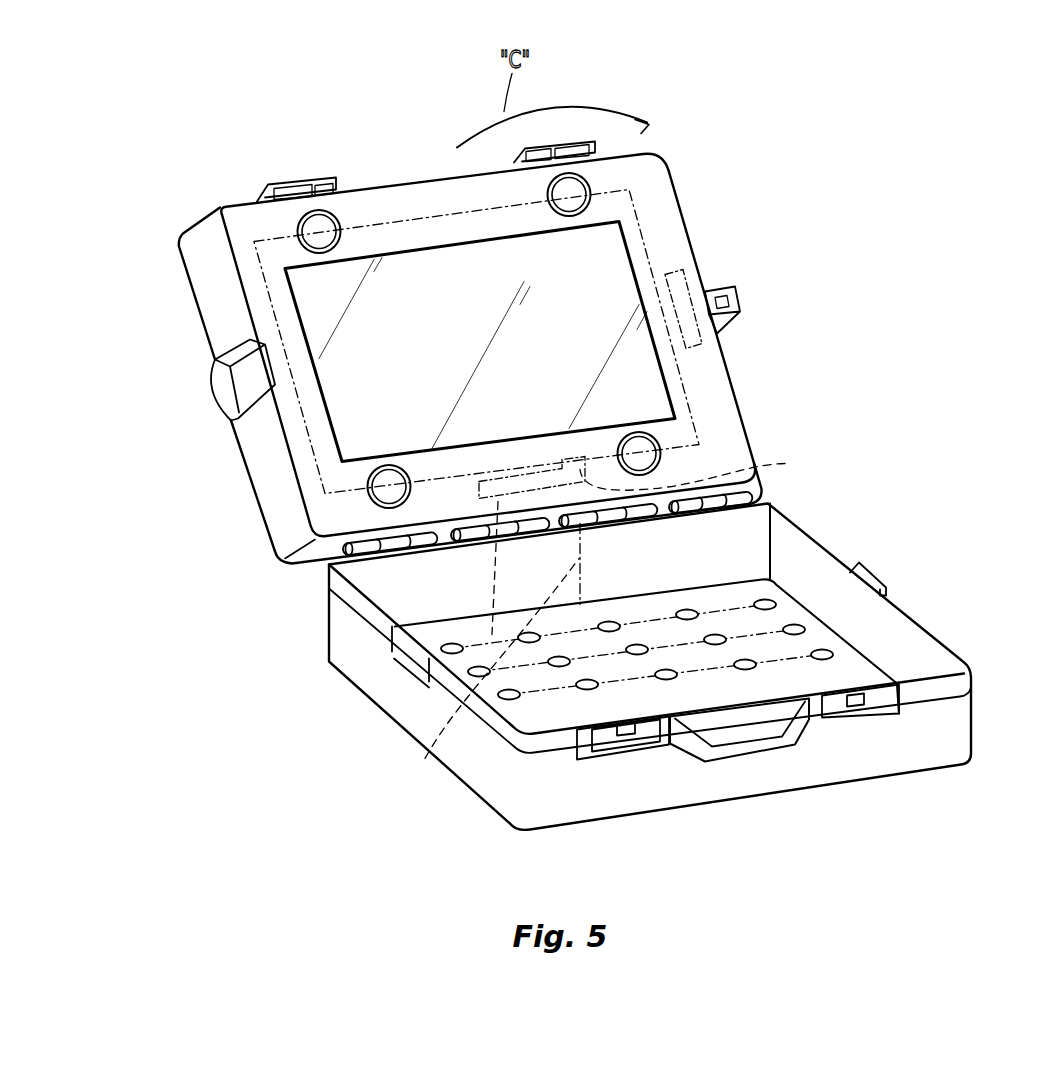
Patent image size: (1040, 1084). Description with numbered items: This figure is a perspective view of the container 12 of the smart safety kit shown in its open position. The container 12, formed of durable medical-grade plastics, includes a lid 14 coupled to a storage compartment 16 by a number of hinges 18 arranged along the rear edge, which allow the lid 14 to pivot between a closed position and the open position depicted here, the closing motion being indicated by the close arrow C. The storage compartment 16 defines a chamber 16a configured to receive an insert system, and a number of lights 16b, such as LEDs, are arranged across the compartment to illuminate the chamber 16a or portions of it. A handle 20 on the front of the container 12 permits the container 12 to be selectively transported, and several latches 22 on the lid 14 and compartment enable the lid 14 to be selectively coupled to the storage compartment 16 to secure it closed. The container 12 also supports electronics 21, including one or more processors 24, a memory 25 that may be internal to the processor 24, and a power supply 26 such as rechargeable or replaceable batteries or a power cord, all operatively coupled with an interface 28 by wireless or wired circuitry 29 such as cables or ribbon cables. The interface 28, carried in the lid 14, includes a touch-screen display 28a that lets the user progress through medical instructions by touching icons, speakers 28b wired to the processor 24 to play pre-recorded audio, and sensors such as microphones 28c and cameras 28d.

The container 12 is at (903, 625).
The lid 14 is at (689, 246).
The storage compartment 16 is at (960, 734).
The chamber 16a is at (786, 544).
The lights 16b is at (585, 688).
The hinges 18 is at (387, 552).
The handle 20 is at (743, 750).
The electronics 21 is at (268, 298).
The latches 22 is at (287, 183).
The processor 24 is at (690, 393).
The memory 25 is at (702, 337).
The power supply 26 is at (437, 687).
The interface 28 is at (439, 255).
The display 28a is at (352, 415).
The speakers 28b is at (327, 222).
The microphones 28c is at (375, 507).
The cameras 28d is at (660, 457).
The circuitry 29 is at (783, 462).